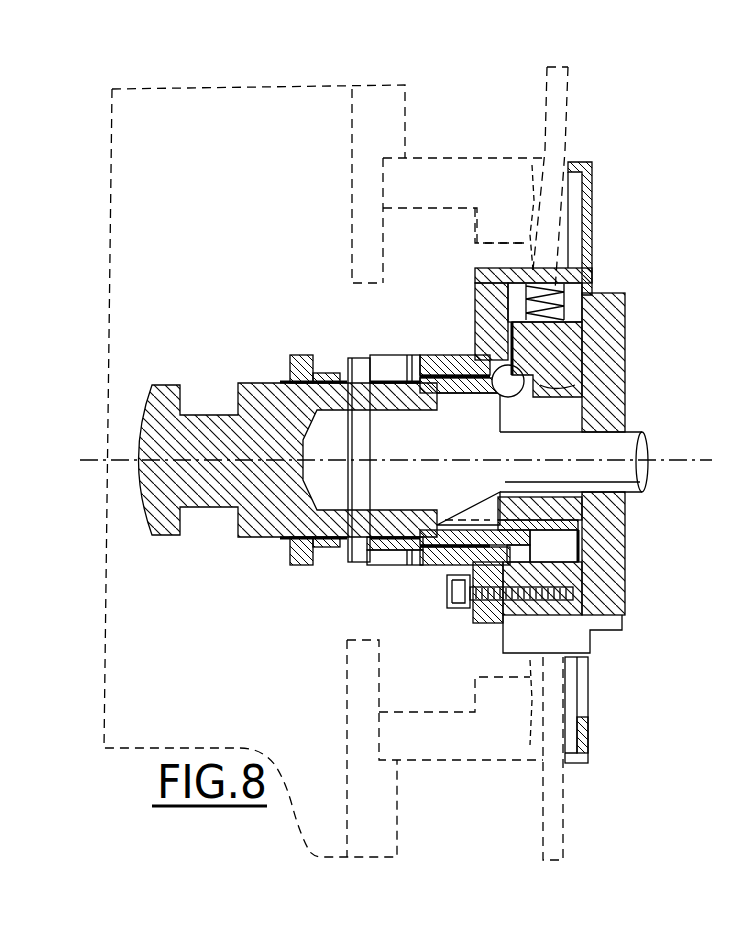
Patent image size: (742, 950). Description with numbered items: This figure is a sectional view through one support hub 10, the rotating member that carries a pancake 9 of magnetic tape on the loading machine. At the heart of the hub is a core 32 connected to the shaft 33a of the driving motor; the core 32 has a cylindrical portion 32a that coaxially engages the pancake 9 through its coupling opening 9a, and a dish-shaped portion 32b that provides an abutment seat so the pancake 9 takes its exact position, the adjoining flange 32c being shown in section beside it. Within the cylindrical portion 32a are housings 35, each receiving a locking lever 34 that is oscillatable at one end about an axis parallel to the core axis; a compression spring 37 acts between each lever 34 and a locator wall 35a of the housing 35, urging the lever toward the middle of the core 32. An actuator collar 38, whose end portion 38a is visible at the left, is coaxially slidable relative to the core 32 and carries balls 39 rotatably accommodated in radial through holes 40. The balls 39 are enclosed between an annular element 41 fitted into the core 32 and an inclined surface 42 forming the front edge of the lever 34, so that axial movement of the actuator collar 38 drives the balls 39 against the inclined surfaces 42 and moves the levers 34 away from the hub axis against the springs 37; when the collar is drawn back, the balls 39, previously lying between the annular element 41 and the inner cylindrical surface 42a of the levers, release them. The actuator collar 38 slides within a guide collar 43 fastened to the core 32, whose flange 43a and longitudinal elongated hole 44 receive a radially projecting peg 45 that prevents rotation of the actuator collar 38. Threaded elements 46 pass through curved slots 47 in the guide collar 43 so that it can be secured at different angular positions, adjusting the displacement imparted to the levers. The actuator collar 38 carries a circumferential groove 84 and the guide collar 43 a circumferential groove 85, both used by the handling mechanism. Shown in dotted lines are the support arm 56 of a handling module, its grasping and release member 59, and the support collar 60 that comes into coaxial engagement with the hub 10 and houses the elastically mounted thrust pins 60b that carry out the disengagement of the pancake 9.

The pancake 9 is at (565, 812).
The coupling opening 9a is at (513, 247).
The support hub 10 is at (620, 225).
The core 32 is at (600, 438).
The cylindrical portion 32a is at (623, 622).
The dish-shaped portion 32b is at (593, 273).
The housing flange 32c is at (570, 162).
The shaft 33a is at (628, 440).
The locking lever 34 is at (600, 312).
The housing 35 is at (572, 283).
The locator wall 35a is at (477, 275).
The compression spring 37 is at (594, 258).
The actuator collar 38 is at (287, 505).
The shaft end 38a is at (170, 490).
The ball 39 is at (496, 395).
The through hole 40 is at (497, 393).
The annular element 41 is at (565, 395).
The inclined surface 42 is at (477, 353).
The inner cylindrical surface 42a is at (598, 368).
The guide collar 43 is at (440, 550).
The collar flange 43a is at (290, 365).
The longitudinal elongated hole 44 is at (392, 372).
The peg 45 is at (350, 358).
The threaded element 46 is at (455, 608).
The curved slot 47 is at (487, 603).
The support arm 56 is at (407, 108).
The grasping and release member 59 is at (478, 760).
The support collar 60 is at (457, 177).
The thrust pin 60b is at (532, 158).
The circumferential groove 84 is at (287, 482).
The circumferential groove 85 is at (330, 365).